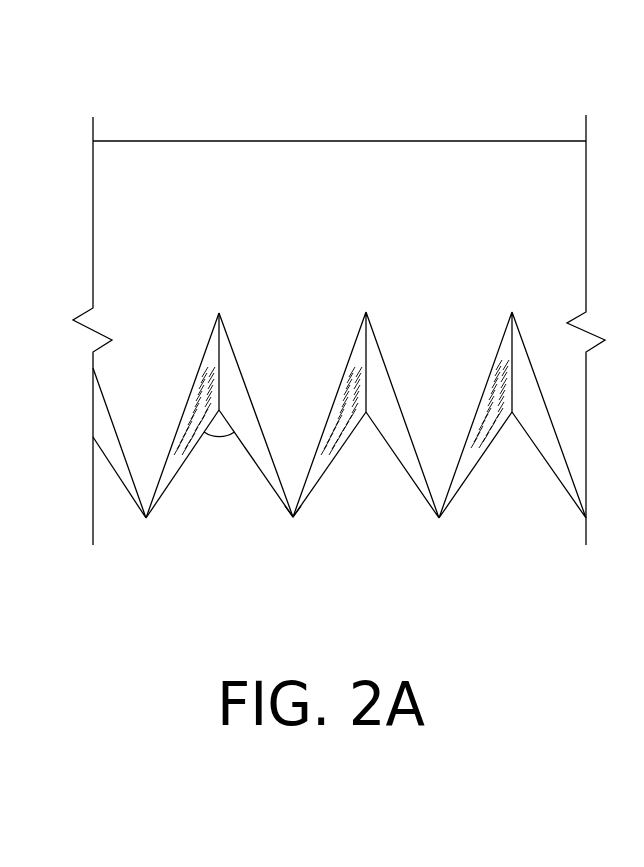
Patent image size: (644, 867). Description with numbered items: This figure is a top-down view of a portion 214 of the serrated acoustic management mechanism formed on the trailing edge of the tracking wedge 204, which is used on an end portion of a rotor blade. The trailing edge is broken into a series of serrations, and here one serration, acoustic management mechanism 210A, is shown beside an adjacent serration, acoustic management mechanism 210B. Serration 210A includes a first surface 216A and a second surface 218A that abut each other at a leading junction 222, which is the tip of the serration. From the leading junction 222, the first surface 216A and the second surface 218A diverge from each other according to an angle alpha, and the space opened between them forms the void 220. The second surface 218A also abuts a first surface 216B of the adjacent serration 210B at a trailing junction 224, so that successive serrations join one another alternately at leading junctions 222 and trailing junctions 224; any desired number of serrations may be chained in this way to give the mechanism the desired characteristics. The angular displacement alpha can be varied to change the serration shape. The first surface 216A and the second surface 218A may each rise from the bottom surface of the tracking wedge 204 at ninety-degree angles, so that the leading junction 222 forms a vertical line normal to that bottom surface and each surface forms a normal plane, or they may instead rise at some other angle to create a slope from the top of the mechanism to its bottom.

The tracking wedge 204 is at (168, 141).
The portion of the acoustic management mechanism 214 is at (383, 90).
The acoustic management mechanism 210A is at (234, 401).
The acoustic management mechanism 210B is at (386, 359).
The first surface 216A is at (210, 405).
The second surface 218A is at (228, 404).
The first surface 216B is at (345, 430).
The void 220 is at (242, 492).
The leading junction 222 is at (219, 313).
The trailing junction 224 is at (293, 518).